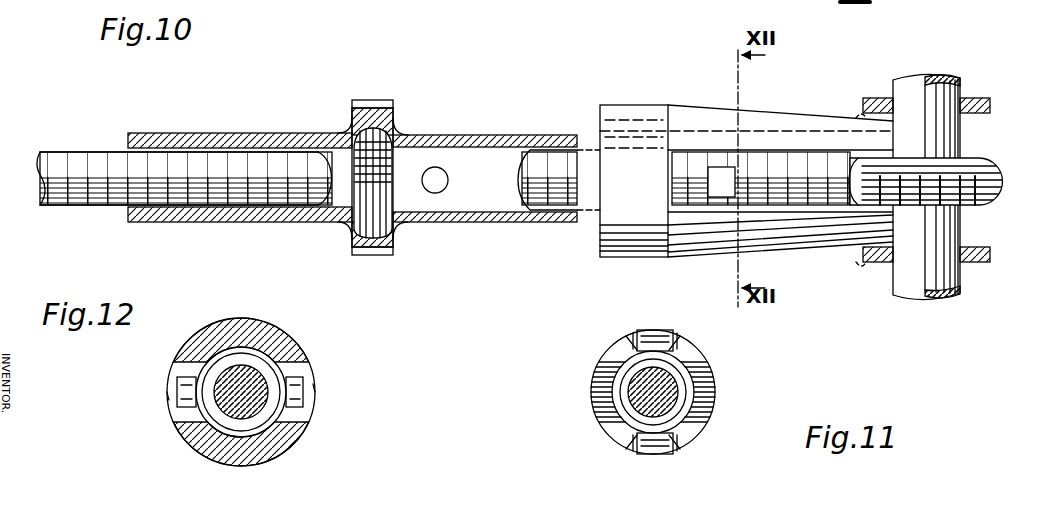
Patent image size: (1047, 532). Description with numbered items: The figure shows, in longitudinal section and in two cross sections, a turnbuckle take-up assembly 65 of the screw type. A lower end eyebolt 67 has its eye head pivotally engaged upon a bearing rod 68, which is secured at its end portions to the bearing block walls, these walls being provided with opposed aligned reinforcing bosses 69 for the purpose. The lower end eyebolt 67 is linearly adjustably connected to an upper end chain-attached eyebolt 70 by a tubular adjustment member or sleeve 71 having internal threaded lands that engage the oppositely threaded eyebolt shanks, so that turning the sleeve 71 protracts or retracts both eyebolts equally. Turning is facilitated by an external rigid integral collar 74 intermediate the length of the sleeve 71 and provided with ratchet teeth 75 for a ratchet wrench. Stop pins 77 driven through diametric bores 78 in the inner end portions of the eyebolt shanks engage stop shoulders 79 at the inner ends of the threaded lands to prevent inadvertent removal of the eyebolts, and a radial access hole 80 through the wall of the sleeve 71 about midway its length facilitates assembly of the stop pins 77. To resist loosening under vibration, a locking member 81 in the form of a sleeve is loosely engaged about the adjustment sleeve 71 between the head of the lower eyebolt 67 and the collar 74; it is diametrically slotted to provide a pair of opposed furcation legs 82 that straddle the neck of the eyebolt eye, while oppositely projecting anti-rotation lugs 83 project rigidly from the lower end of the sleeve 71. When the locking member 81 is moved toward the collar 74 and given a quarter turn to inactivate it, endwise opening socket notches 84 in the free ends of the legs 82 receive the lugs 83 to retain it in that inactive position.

In FIG. 10, the turnbuckle take-up assembly 65 is at (633, 92).
In FIG. 10, the lower end eyebolt 67 is at (1003, 176).
In FIG. 12, the lower end eyebolt 67 is at (230, 405).
In FIG. 11, the lower end eyebolt 67 is at (672, 392).
In FIG. 10, the bearing rod 68 is at (960, 125).
In FIG. 10, the reinforcing bosses 69 is at (992, 100).
In FIG. 10, the upper end chain-attached eyebolt 70 is at (118, 152).
In FIG. 10, the tubular adjustment member or sleeve 71 is at (504, 136).
In FIG. 12, the tubular adjustment member or sleeve 71 is at (246, 352).
In FIG. 11, the tubular adjustment member or sleeve 71 is at (688, 404).
In FIG. 10, the external rigid integral collar 74 is at (357, 233).
In FIG. 10, the ratchet teeth 75 is at (377, 255).
In FIG. 10, the stop pins 77 is at (292, 224).
In FIG. 10, the diametric bores 78 is at (354, 218).
In FIG. 10, the stop shoulders 79 is at (226, 208).
In FIG. 10, the radial access hole 80 is at (437, 194).
In FIG. 10, the locking member 81 is at (650, 105).
In FIG. 12, the locking member 81 is at (315, 352).
In FIG. 11, the locking member 81 is at (706, 356).
In FIG. 10, the furcation legs 82 is at (822, 131).
In FIG. 12, the furcation legs 82 is at (277, 343).
In FIG. 11, the furcation legs 82 is at (613, 345).
In FIG. 10, the anti-rotation lugs 83 is at (715, 170).
In FIG. 12, the anti-rotation lugs 83 is at (187, 392).
In FIG. 11, the anti-rotation lugs 83 is at (655, 334).
In FIG. 10, the socket notches 84 is at (860, 118).
In FIG. 11, the socket notches 84 is at (678, 342).